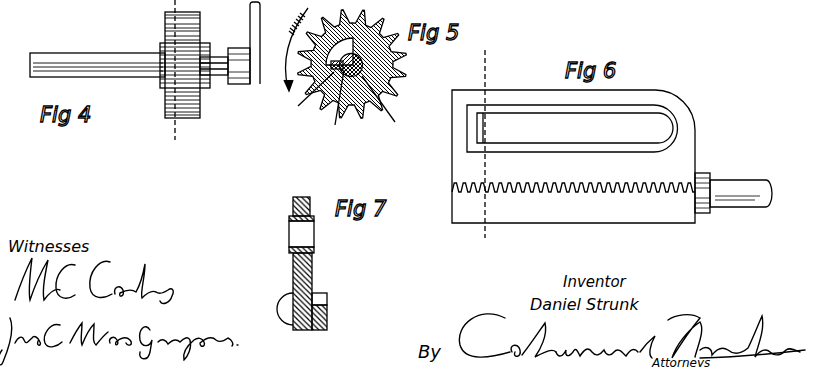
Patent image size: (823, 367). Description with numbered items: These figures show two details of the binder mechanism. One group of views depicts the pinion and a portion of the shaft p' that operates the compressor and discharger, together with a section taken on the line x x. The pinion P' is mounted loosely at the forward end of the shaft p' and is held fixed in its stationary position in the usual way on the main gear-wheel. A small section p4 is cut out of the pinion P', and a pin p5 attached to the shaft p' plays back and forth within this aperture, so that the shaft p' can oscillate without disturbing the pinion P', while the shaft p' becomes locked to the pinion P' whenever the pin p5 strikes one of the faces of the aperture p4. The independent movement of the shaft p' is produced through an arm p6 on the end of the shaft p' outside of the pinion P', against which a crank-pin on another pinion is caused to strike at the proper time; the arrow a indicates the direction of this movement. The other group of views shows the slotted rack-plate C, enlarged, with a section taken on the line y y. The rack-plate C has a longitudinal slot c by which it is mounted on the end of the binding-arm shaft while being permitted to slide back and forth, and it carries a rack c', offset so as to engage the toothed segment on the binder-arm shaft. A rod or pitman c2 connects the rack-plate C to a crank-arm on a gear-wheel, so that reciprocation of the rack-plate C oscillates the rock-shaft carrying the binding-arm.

In FIG. 4, the shaft p' is at (129, 87).
In FIG. 5, the shaft p' is at (383, 109).
In FIG. 5, the pinion P' is at (361, 64).
In FIG. 5, the cut-out section p4 is at (300, 101).
In FIG. 5, the pin p5 is at (339, 103).
In FIG. 4, the arm p6 is at (242, 43).
In FIG. 4, the section line x is at (171, 77).
In FIG. 6, the section line y is at (481, 144).
In FIG. 5, the direction arrow a is at (291, 45).
In FIG. 6, the rack-plate C is at (561, 156).
In FIG. 7, the rack-plate C is at (292, 263).
In FIG. 6, the longitudinal slot c is at (572, 128).
In FIG. 7, the longitudinal slot c is at (301, 234).
In FIG. 6, the rack c' is at (573, 177).
In FIG. 7, the rack c' is at (323, 303).
In FIG. 6, the rod or pitman c2 is at (733, 189).